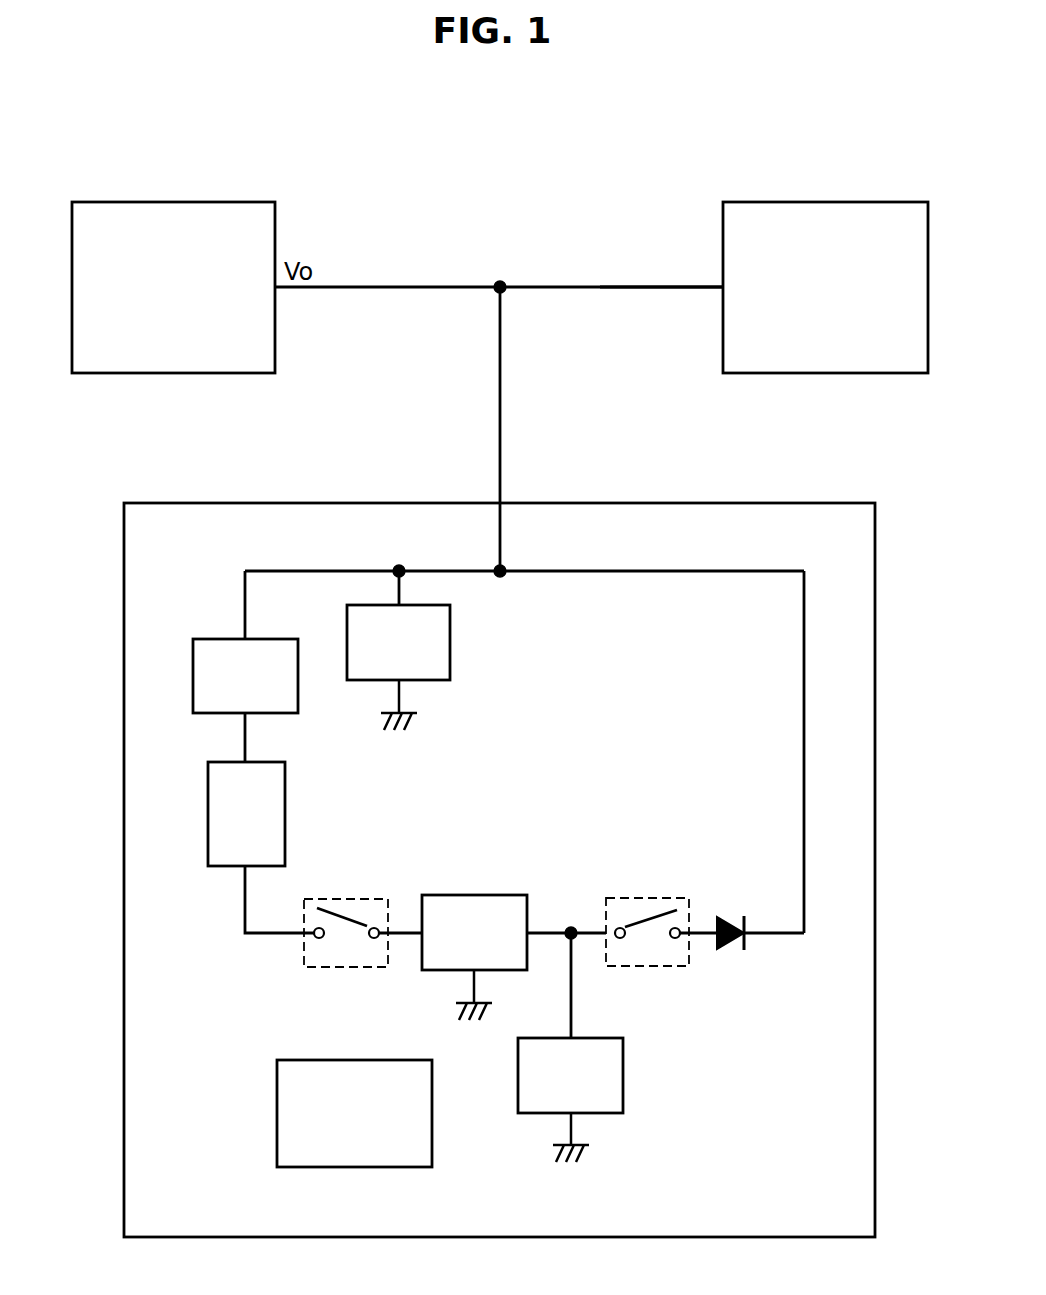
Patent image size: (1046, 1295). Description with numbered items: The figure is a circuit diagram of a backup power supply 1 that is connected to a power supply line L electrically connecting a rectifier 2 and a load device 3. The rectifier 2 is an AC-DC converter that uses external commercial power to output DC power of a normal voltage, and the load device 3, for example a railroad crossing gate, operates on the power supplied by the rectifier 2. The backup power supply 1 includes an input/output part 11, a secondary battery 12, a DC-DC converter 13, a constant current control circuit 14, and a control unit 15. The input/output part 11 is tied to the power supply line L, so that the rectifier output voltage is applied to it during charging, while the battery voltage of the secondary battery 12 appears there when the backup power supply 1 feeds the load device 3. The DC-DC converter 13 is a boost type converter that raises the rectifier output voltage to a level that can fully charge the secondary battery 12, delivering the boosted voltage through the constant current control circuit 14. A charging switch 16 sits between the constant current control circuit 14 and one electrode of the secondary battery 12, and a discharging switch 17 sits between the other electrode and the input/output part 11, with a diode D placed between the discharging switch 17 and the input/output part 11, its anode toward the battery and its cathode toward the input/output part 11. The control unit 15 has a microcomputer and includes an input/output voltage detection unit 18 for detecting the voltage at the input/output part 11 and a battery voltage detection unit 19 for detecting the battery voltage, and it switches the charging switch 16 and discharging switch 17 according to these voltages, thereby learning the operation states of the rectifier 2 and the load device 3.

The backup power supply 1 is at (830, 503).
The rectifier 2 is at (227, 202).
The load device 3 is at (878, 202).
The input/output part 11 is at (507, 568).
The secondary battery 12 is at (507, 895).
The DC-DC converter 13 is at (193, 655).
The constant current control circuit 14 is at (208, 776).
The control unit 15 is at (277, 1074).
The charging switch 16 is at (371, 899).
The discharging switch 17 is at (671, 898).
The input/output voltage detection unit 18 is at (347, 621).
The battery voltage detection unit 19 is at (623, 1053).
The diode D is at (728, 917).
The power supply line L is at (638, 287).